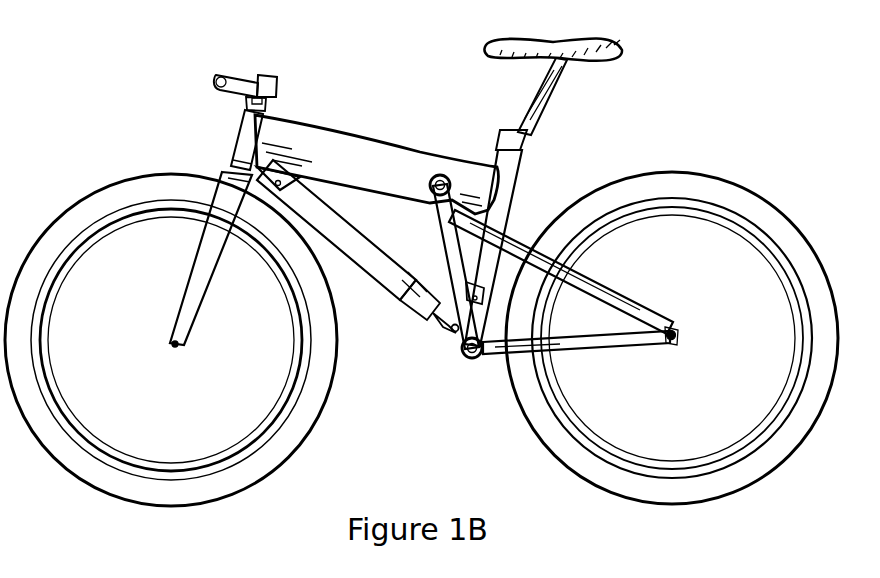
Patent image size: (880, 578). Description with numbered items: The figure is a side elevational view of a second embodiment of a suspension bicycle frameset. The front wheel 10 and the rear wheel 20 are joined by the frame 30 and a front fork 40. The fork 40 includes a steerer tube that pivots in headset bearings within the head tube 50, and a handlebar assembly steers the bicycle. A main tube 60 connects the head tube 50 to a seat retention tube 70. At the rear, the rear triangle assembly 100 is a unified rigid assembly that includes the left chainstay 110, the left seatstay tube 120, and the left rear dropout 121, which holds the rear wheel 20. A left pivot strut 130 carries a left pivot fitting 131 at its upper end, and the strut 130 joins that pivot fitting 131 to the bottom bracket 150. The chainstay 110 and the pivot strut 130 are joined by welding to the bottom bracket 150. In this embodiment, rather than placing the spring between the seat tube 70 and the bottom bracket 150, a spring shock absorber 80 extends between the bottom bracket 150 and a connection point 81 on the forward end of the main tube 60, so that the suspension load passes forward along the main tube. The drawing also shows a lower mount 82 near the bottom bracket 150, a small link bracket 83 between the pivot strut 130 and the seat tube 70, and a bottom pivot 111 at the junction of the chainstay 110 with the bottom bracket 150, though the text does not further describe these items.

The front wheel 10 is at (68, 226).
The rear wheel 20 is at (695, 190).
The frame 30 is at (399, 130).
The front fork 40 is at (226, 197).
The head tube 50 is at (245, 132).
The main tube 60 is at (330, 145).
The seat retention tube 70 is at (518, 138).
The spring shock absorber 80 is at (392, 281).
The connection point 81 is at (296, 186).
The lower shock mount 82 is at (451, 331).
The link bracket 83 is at (473, 285).
The rear triangle assembly 100 is at (623, 292).
The left chainstay 110 is at (572, 342).
The bottom pivot 111 is at (483, 362).
The left seatstay tube 120 is at (607, 293).
The left rear dropout 121 is at (674, 330).
The left pivot strut 130 is at (448, 242).
The left pivot fitting 131 is at (428, 202).
The bottom bracket 150 is at (463, 355).